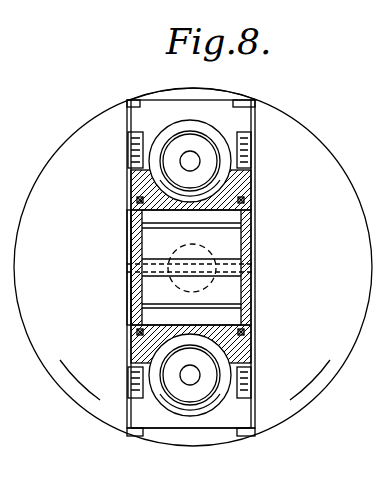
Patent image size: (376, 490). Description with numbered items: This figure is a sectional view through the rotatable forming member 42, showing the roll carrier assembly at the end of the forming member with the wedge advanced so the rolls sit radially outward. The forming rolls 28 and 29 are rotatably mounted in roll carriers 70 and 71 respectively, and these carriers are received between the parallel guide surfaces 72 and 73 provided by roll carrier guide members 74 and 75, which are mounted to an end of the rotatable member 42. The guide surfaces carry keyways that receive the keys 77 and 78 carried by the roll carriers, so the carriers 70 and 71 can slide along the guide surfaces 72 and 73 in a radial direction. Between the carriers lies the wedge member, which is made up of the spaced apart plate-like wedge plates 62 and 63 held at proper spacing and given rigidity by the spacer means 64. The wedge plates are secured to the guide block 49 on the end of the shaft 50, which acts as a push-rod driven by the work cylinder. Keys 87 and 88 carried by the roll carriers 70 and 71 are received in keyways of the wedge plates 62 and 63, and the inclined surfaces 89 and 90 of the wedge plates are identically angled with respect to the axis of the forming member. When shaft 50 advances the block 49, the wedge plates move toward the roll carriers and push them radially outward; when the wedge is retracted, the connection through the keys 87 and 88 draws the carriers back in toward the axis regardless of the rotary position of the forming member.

The forming roll 28 is at (170, 125).
The forming roll 29 is at (210, 413).
The rotatable forming member 42 is at (236, 95).
The guide block 49 is at (150, 296).
The shaft 50 is at (238, 290).
The wedge plate 62 is at (247, 244).
The wedge plate 63 is at (133, 255).
The spacer means 64 is at (182, 258).
The roll carrier 70 is at (250, 162).
The roll carrier 71 is at (140, 405).
The guide surface 72 is at (256, 410).
The guide surface 73 is at (128, 417).
The roll carrier guide member 74 is at (312, 378).
The roll carrier guide member 75 is at (72, 370).
The key 77 is at (253, 103).
The key 78 is at (130, 102).
The key 87 is at (137, 203).
The key 88 is at (137, 333).
The inclined surface 89 is at (250, 347).
The inclined surface 90 is at (245, 197).